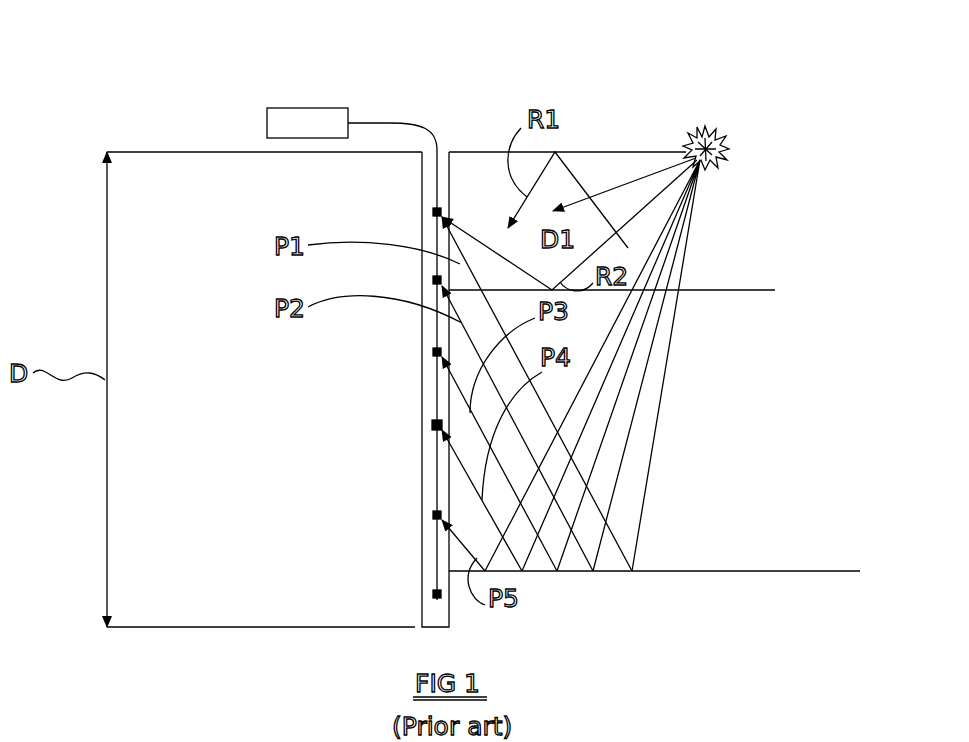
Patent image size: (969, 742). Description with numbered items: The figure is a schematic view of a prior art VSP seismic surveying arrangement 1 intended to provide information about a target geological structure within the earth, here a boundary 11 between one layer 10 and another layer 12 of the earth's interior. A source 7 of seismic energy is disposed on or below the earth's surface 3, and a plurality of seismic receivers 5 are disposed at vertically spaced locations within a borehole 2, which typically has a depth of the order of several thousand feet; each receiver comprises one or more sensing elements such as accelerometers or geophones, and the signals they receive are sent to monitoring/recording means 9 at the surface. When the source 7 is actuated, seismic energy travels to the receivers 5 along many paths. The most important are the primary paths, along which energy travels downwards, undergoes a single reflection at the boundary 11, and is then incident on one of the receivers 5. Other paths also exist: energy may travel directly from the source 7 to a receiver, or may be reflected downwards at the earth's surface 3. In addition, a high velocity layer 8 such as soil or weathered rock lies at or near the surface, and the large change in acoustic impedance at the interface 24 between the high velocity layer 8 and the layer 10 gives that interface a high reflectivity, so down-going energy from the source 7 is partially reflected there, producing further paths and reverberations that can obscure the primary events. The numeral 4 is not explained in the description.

The VSP seismic surveying arrangement 1 is at (786, 121).
The borehole 2 is at (445, 142).
The earth's surface 3 is at (250, 152).
The seismic arrangement 4 is at (735, 741).
The seismic receivers 5 is at (430, 354).
The source 7 is at (697, 130).
The high velocity layer 8 is at (804, 216).
The monitoring/recording means 9 is at (307, 121).
The layer 10 is at (845, 413).
The boundary 11 is at (760, 540).
The layer 12 is at (832, 627).
The interface 24 is at (781, 296).